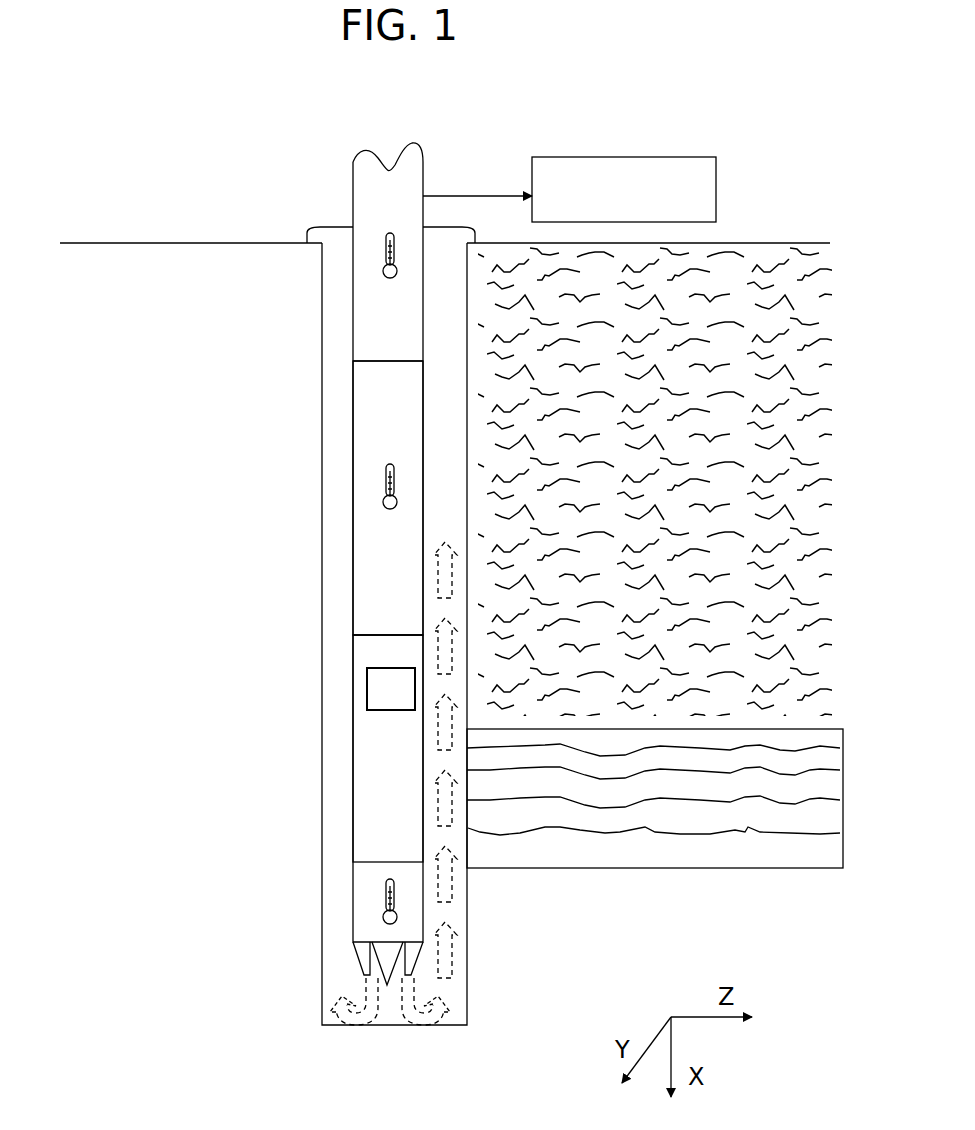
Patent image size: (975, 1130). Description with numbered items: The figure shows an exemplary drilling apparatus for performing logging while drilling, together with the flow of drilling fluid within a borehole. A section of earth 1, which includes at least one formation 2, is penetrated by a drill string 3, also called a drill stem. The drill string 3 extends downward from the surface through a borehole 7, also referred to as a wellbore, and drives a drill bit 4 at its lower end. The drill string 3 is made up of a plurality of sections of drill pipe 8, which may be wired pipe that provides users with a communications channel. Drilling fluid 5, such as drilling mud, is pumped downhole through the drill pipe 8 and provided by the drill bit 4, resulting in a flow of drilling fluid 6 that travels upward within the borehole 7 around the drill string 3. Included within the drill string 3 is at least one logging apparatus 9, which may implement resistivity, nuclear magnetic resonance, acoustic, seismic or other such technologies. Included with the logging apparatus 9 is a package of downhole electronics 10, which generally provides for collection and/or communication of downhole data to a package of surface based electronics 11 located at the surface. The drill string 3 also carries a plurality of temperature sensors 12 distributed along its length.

The section of earth 1 is at (748, 272).
The formation 2 is at (688, 790).
The drill string 3 is at (353, 177).
The drill bit 4 is at (360, 955).
The drilling fluid 5 is at (437, 1013).
The flow of drilling fluid 6 is at (451, 880).
The borehole 7 is at (322, 380).
The drill pipe 8 is at (375, 545).
The logging apparatus 9 is at (370, 732).
The downhole electronics 10 is at (391, 689).
The surface based electronics 11 is at (678, 157).
The temperature sensors 12 is at (385, 278).